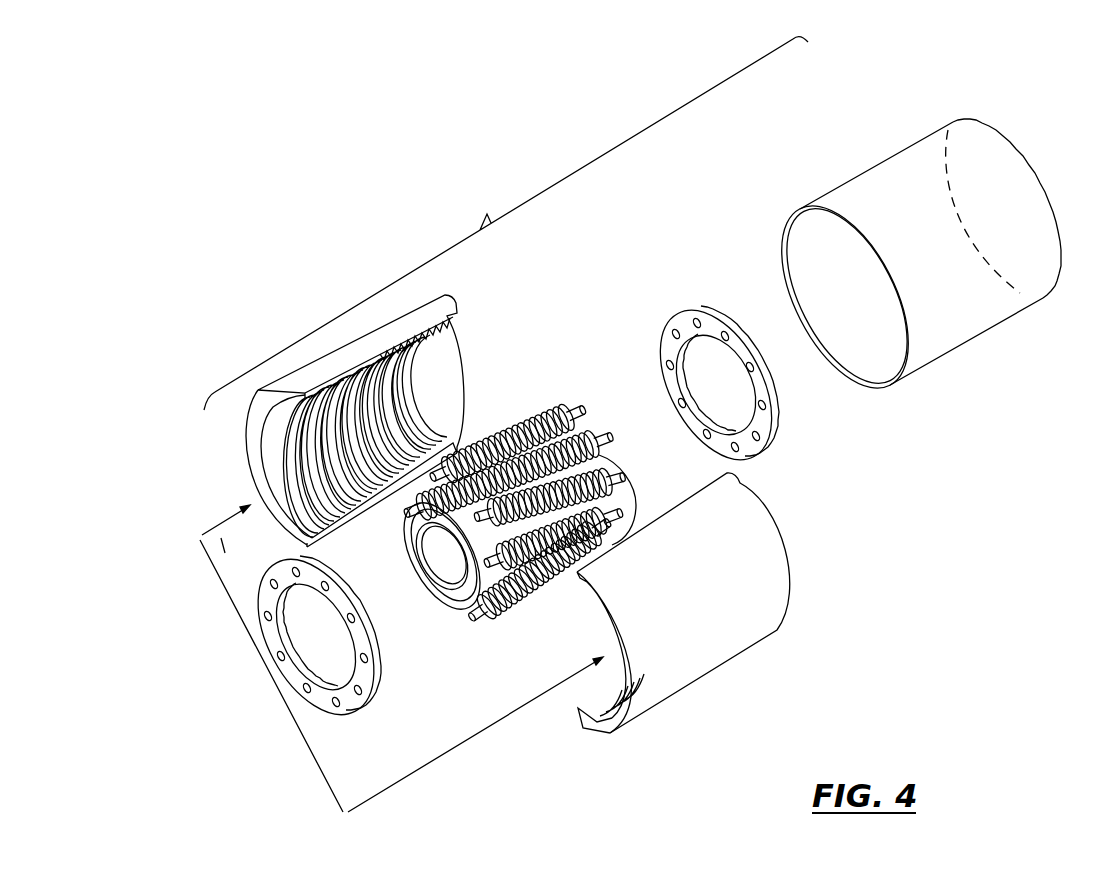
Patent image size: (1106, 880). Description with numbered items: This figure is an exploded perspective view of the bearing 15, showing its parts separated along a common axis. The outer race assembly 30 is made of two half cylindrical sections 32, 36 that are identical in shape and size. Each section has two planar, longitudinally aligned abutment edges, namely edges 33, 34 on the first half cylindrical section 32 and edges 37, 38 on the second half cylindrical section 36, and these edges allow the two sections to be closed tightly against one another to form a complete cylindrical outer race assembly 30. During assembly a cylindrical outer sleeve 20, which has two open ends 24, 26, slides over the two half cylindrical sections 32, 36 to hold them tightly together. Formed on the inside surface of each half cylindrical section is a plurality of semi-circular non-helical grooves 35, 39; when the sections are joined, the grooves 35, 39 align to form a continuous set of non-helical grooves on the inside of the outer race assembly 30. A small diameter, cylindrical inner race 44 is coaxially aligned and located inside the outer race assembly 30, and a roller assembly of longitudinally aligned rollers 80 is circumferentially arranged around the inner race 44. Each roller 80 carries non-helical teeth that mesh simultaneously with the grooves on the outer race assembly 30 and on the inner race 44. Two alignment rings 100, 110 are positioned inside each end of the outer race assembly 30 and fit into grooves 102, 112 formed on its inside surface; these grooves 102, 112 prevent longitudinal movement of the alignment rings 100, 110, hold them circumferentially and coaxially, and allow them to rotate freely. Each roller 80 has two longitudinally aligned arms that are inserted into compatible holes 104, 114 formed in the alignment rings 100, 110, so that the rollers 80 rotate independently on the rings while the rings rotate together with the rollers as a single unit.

The bearing 15 is at (476, 205).
The cylindrical outer sleeve 20 is at (904, 249).
The open end 24 is at (815, 262).
The open end 26 is at (995, 207).
The outer race assembly 30 is at (291, 636).
The half cylindrical section 32 is at (342, 421).
The abutment edge 33 is at (457, 322).
The abutment edge 34 is at (470, 440).
The semi-circular non-helical grooves 35 is at (403, 395).
The half cylindrical section 36 is at (692, 626).
The abutment edge 37 is at (578, 574).
The abutment edge 38 is at (578, 712).
The semi-circular non-helical grooves 39 is at (581, 724).
The cylindrical inner race 44 is at (512, 503).
The rollers 80 is at (580, 405).
The alignment ring 100 is at (401, 658).
The groove 102 is at (278, 478).
The holes 104 is at (266, 634).
The alignment ring 110 is at (724, 377).
The groove 112 is at (388, 410).
The holes 114 is at (758, 440).